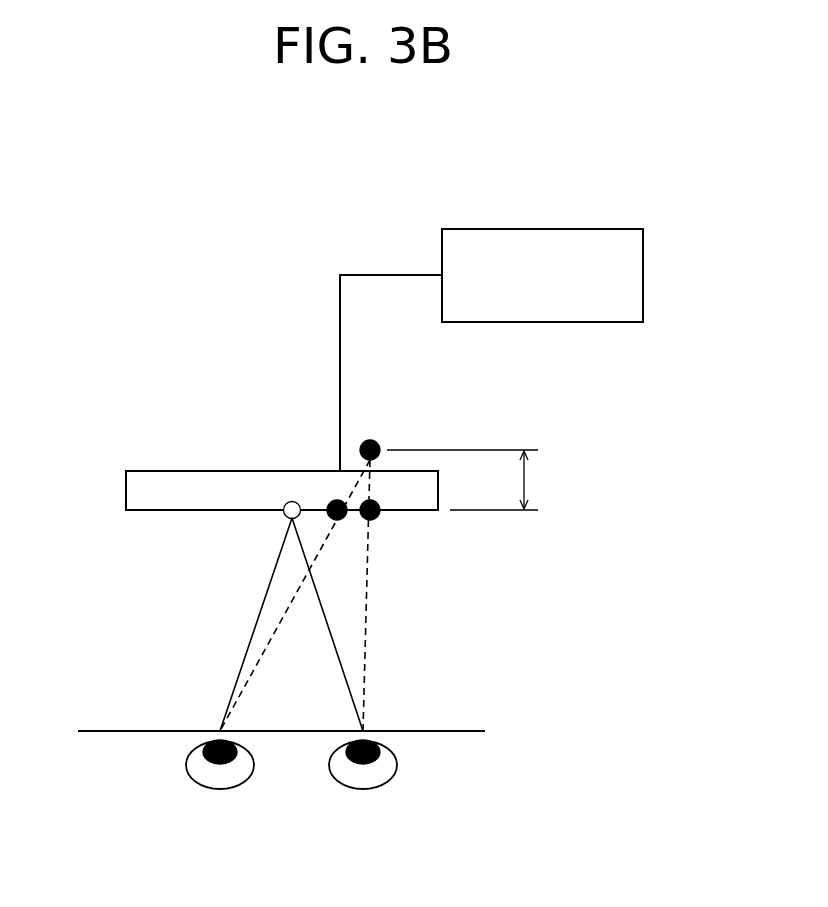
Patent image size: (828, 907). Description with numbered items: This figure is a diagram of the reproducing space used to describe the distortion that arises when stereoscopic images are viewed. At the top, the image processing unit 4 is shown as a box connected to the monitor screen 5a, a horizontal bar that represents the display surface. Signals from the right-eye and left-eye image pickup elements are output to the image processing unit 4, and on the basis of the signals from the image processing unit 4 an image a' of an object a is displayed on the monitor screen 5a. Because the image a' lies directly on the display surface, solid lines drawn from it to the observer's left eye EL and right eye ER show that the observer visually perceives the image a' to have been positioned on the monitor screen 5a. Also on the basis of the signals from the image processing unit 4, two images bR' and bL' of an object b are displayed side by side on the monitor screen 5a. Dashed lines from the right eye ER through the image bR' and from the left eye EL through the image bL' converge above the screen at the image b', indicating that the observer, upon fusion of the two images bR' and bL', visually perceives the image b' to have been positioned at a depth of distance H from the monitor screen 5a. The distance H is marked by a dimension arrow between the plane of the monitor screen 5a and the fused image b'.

The image processing unit 4 is at (575, 228).
The monitor screen 5a is at (148, 511).
The image of object a a' is at (286, 470).
The image of object b b' is at (387, 422).
The left-eye image of object b bL' is at (370, 566).
The right-eye image of object b bR' is at (417, 566).
The distance H is at (470, 480).
The left eye EL is at (220, 791).
The right eye ER is at (363, 791).